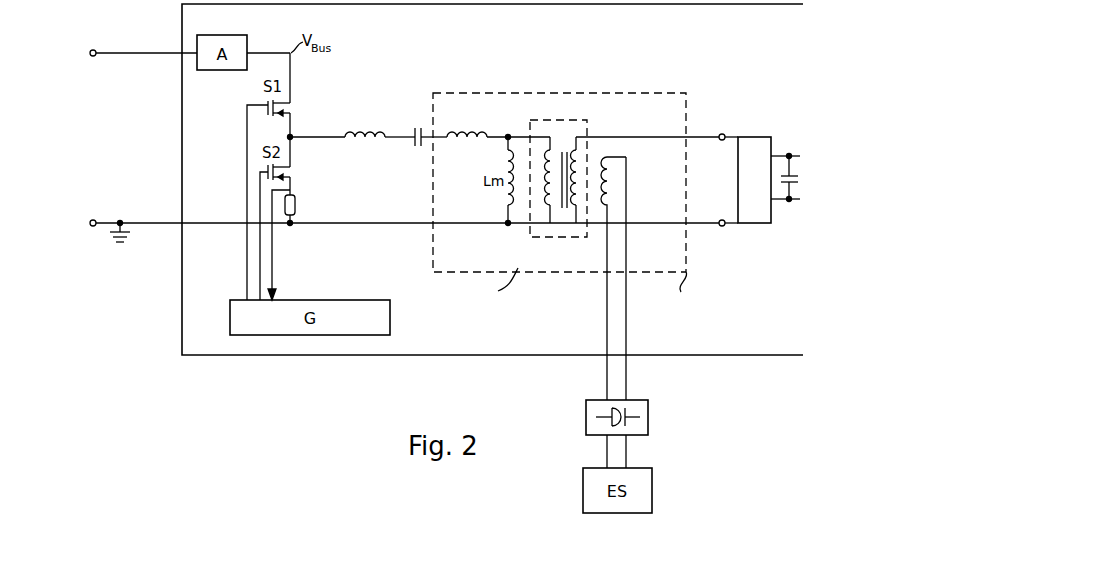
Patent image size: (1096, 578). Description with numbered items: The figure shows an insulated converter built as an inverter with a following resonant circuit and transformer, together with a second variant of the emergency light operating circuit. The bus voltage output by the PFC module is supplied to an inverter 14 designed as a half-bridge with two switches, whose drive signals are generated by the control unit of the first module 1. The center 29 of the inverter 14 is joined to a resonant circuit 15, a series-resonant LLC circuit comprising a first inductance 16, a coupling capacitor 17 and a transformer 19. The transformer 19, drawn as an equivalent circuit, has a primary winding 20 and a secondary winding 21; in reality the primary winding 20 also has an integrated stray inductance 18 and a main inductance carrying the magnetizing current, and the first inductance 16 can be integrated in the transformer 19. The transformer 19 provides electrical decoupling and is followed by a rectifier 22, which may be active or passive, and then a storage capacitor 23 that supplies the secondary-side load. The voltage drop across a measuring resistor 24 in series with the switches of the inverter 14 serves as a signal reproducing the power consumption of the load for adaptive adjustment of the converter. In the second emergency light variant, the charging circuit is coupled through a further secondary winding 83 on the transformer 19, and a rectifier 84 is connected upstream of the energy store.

The first module 1 is at (519, 356).
The inverter 14 is at (290, 52).
The resonant circuit 15 is at (397, 128).
The first inductance 16 is at (357, 130).
The coupling capacitor 17 is at (418, 148).
The inductance 18 is at (478, 134).
The transformer 19 is at (567, 263).
The primary winding 20 is at (548, 236).
The secondary winding 21 is at (577, 228).
The rectifier 22 is at (752, 137).
The storage capacitor 23 is at (789, 156).
The measuring resistor 24 is at (296, 207).
The center 29 is at (291, 137).
The further secondary winding 83 is at (618, 157).
The rectifier 84 is at (586, 418).